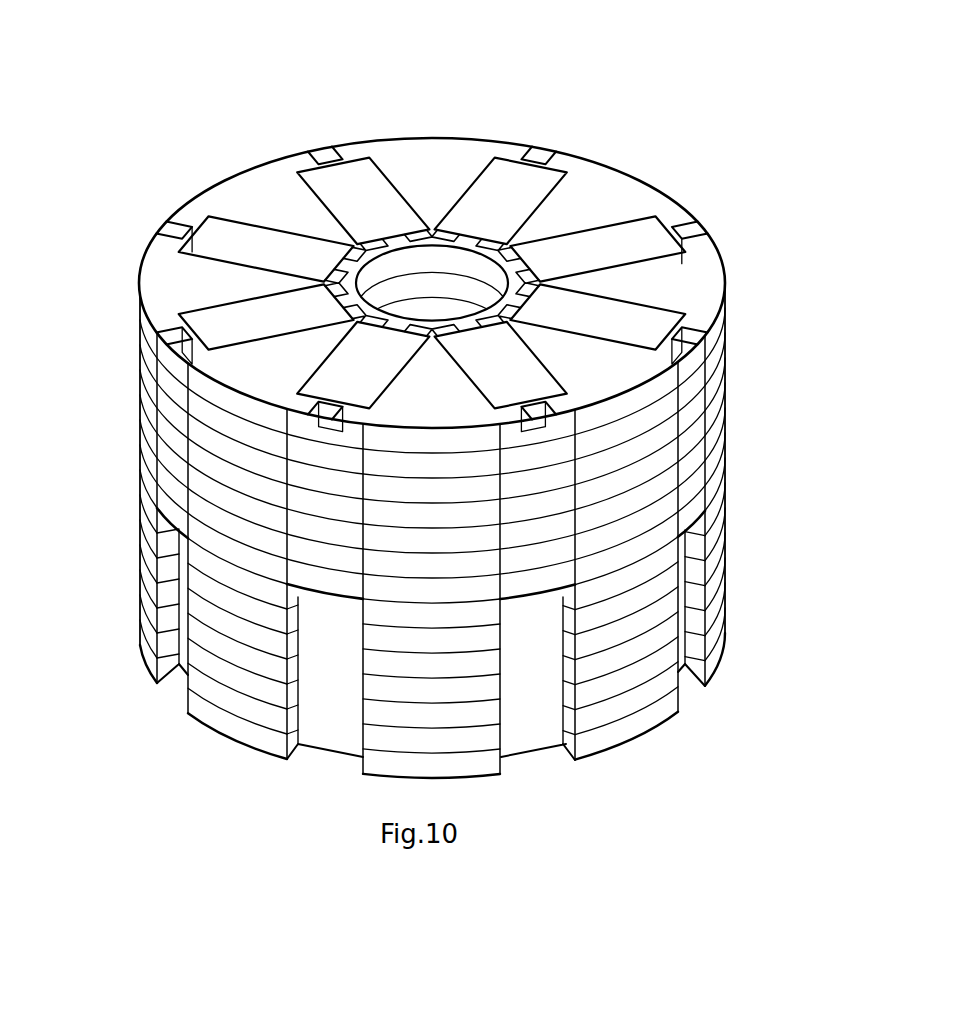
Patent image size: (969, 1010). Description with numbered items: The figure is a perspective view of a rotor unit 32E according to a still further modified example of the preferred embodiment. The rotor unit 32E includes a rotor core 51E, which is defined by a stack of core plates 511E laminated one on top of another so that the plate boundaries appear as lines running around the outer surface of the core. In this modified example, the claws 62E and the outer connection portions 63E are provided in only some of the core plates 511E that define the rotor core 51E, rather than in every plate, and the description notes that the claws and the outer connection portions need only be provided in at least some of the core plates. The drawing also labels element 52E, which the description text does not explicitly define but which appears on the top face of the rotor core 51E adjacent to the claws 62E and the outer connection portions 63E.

The rotor unit 32E is at (348, 88).
The rotor core 51E is at (739, 328).
The core plates 511E is at (717, 447).
The permanent magnet slot 52E is at (265, 250).
The claws 62E is at (200, 215).
The outer connection portions 63E is at (173, 228).